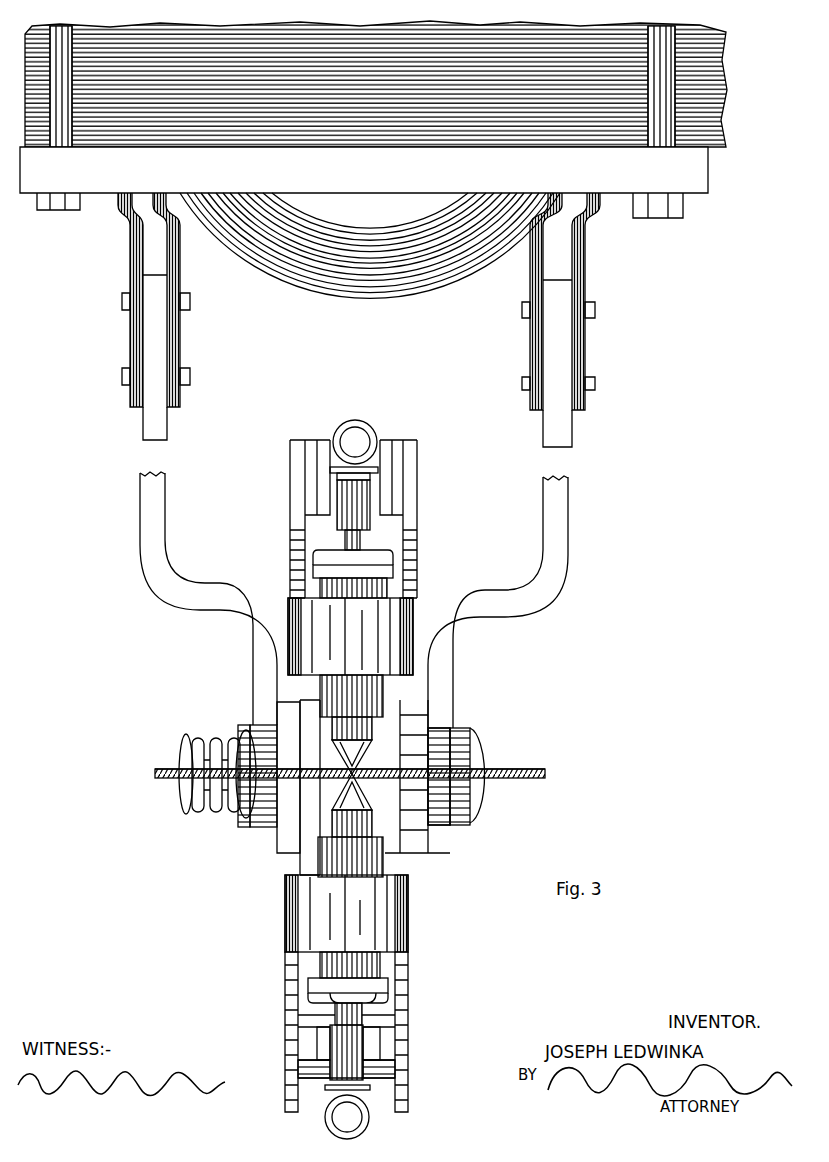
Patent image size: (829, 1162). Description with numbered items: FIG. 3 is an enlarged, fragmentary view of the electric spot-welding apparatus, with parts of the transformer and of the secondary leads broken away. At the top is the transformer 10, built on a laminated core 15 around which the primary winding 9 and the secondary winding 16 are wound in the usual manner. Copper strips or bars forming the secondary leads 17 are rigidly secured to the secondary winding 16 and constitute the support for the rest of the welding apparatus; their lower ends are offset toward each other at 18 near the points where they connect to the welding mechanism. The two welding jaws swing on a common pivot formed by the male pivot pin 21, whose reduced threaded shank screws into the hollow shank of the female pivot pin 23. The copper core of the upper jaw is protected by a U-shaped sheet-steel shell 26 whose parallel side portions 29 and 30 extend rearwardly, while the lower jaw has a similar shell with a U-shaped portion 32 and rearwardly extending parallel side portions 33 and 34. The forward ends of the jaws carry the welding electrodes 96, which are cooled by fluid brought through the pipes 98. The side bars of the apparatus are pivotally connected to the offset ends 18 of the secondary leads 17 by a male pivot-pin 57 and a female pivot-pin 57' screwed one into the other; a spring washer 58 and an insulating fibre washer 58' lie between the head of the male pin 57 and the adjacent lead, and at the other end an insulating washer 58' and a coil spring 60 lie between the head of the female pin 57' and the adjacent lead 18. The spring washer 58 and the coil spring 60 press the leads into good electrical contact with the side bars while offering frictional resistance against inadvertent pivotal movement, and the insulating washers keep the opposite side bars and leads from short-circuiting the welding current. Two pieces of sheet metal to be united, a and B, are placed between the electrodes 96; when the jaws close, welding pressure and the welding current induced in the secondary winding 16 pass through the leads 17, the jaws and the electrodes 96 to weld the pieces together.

The transformer 10 is at (678, 167).
The laminated core 15 is at (578, 112).
The secondary winding 16 is at (133, 275).
The primary winding 9 is at (293, 242).
The secondary leads 17 is at (150, 530).
The offset lower ends of secondary leads 18 is at (262, 692).
The side portion of upper protecting shell 29 is at (410, 528).
The side portion of upper protecting shell 30 is at (298, 532).
The cooling fluid supply pipes 98 is at (360, 440).
The U-shaped protecting shell 26 is at (368, 648).
The welding electrodes 96 is at (350, 735).
The male pivot pin 21 is at (454, 762).
The female pivot pin 23 is at (248, 760).
The male pivot-pin 57 is at (507, 784).
The spring washer 58 is at (477, 795).
The female pivot-pin 57' is at (179, 776).
The insulating fibre washer 58' is at (241, 799).
The coil spring 60 is at (202, 800).
The piece of sheet metal a is at (522, 775).
The piece of sheet metal B is at (528, 783).
The U-shaped portion of lower protecting shell 32 is at (348, 918).
The side portion of lower protecting shell 33 is at (402, 1027).
The side portion of lower protecting shell 34 is at (296, 1022).